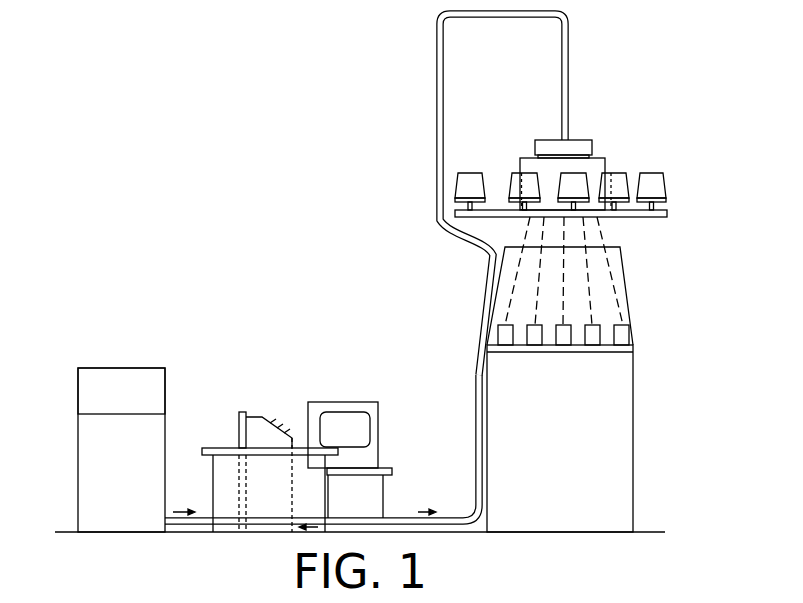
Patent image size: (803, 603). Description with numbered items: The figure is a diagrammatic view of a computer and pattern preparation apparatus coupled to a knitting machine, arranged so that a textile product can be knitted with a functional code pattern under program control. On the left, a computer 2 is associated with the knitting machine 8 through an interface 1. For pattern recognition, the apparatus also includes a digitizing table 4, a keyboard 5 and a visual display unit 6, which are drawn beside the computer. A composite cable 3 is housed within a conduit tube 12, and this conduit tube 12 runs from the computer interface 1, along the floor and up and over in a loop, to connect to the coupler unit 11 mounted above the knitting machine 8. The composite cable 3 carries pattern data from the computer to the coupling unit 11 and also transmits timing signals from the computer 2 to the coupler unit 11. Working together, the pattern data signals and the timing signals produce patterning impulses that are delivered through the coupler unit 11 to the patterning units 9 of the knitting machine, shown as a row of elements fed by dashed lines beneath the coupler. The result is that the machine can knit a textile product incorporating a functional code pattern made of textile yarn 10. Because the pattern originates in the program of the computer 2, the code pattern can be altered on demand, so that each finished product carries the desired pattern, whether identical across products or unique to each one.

The interface 1 is at (78, 470).
The computer 2 is at (78, 395).
The composite cable 3 is at (205, 517).
The digitizing table 4 is at (226, 448).
The keyboard 5 is at (258, 417).
The visual display unit 6 is at (378, 428).
The knitting machine 8 is at (630, 426).
The patterning units 9 is at (563, 340).
The textile yarn 10 is at (563, 305).
The coupler unit 11 is at (607, 157).
The conduit tube 12 is at (572, 60).